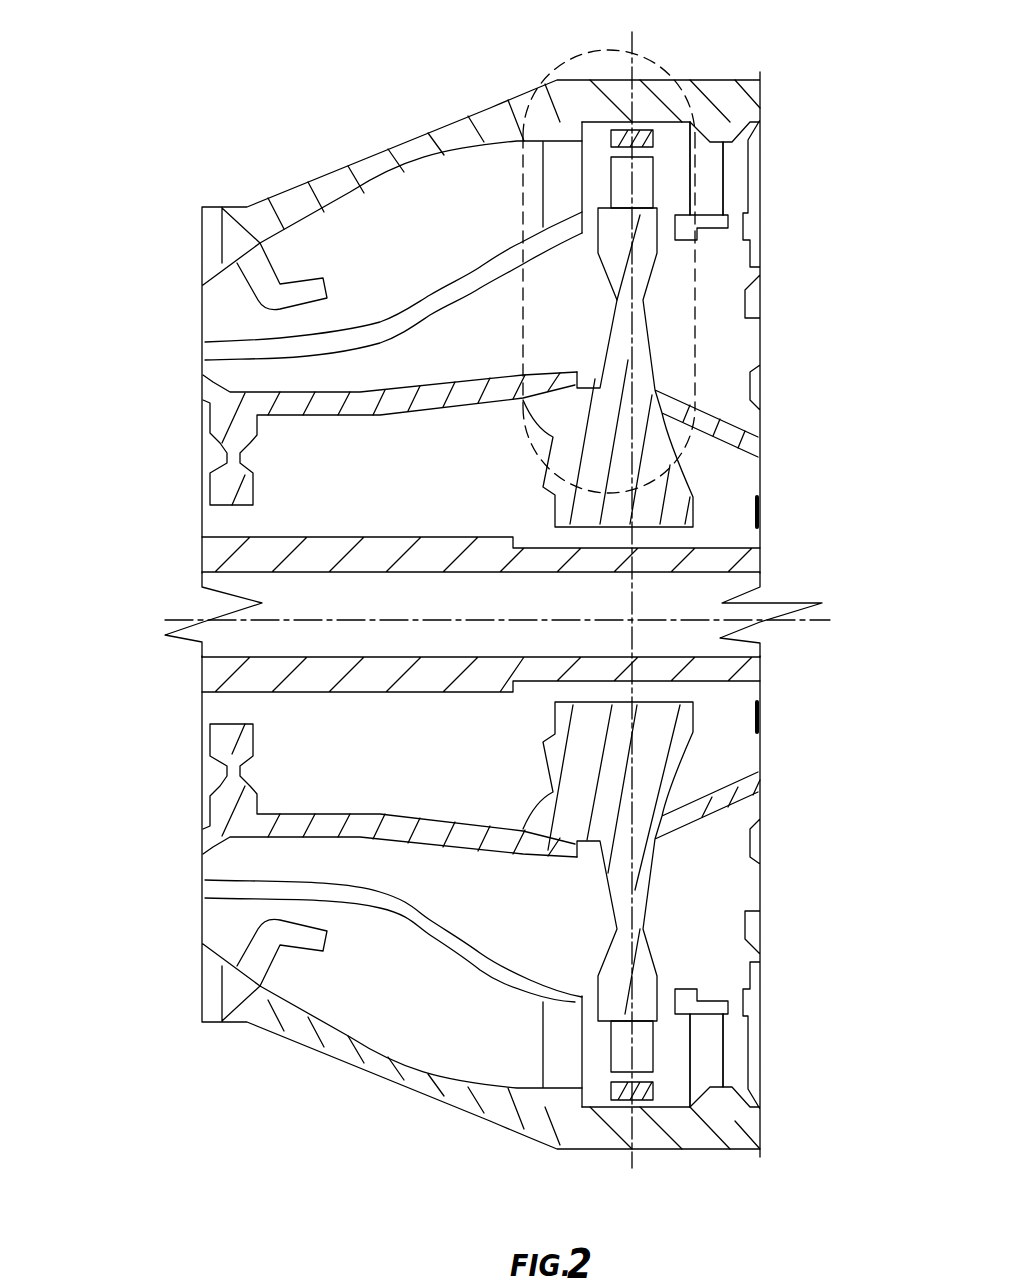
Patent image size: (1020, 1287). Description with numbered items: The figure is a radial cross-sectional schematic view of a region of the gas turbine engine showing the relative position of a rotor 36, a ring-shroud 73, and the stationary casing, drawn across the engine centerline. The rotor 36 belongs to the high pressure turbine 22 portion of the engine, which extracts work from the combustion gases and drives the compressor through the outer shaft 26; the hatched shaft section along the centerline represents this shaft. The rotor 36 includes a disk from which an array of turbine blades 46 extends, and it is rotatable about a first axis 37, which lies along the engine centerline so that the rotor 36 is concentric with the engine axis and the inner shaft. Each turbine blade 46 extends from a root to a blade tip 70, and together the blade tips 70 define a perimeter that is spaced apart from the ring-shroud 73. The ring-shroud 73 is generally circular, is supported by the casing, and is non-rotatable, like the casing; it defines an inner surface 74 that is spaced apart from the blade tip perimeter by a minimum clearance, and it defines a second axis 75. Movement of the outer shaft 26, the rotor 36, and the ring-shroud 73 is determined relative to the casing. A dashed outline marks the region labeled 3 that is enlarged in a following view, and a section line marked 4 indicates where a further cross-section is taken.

The detail region of FIG. 3 is at (553, 68).
The section line 4- 4 is at (626, 1168).
The high pressure turbine 22 is at (655, 970).
The outer shaft 26 is at (432, 818).
The rotor 36 is at (545, 328).
The first axis 37 is at (293, 620).
The turbine blades 46 is at (778, 1067).
The blade tip 70 is at (534, 1152).
The ring-shroud 73 is at (705, 1170).
The inner surface 74 is at (788, 1130).
The second axis 75 is at (481, 674).